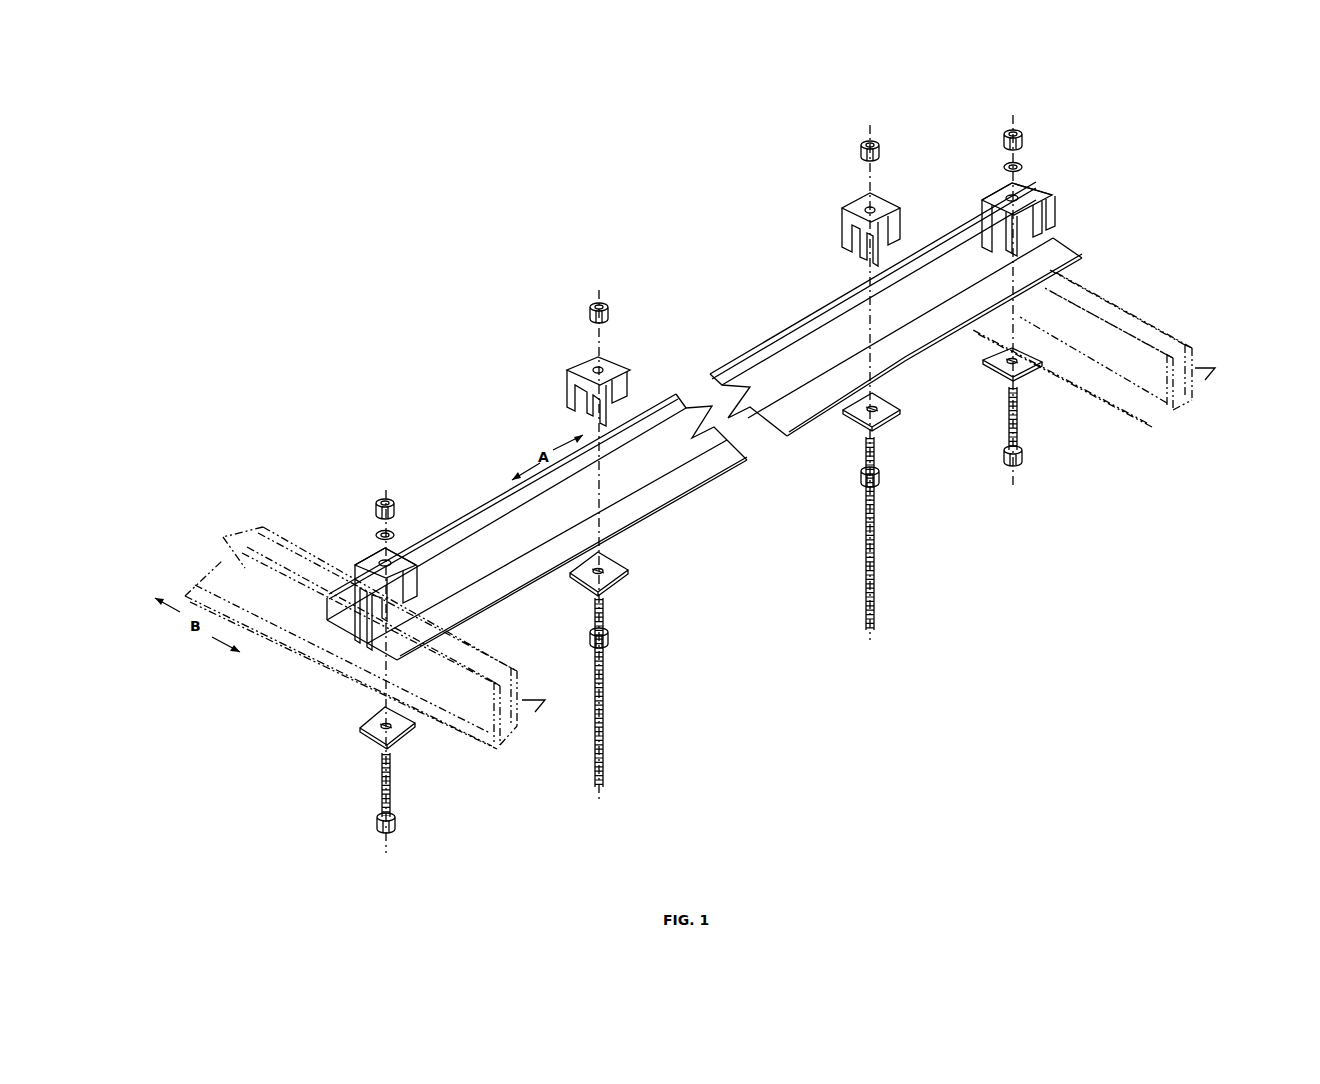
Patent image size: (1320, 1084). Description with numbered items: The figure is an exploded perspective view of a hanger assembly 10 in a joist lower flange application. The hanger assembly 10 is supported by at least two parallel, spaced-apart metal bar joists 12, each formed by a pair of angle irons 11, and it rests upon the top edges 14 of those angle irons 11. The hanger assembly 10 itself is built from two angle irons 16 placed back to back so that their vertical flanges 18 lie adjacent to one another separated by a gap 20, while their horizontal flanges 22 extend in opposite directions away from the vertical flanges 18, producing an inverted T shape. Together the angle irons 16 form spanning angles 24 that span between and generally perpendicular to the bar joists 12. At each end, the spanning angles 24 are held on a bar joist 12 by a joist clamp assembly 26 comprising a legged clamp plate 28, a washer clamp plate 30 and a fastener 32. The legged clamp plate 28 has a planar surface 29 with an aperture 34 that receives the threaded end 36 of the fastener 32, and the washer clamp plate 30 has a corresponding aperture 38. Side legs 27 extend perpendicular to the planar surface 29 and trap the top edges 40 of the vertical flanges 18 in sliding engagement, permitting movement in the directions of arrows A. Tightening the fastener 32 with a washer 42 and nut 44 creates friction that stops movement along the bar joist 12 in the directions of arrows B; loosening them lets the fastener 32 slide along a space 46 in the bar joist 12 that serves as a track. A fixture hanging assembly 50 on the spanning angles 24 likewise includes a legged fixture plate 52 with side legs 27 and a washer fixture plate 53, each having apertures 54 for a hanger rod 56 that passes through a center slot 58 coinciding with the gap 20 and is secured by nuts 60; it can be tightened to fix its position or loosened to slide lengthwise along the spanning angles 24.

The hanger assembly 10 is at (663, 245).
The angle irons 11 is at (470, 745).
The metal bar joists 12 is at (515, 750).
The top edges 14 is at (470, 668).
The angle irons 16 is at (762, 350).
The vertical flanges 18 is at (470, 511).
The gap 20 is at (650, 418).
The horizontal flanges 22 is at (340, 617).
The spanning angles 24 is at (370, 644).
The joist clamp assembly 26 is at (297, 487).
The side legs 27 is at (354, 572).
The legged clamp plate 28 is at (400, 563).
The planar surface 29 is at (398, 560).
The washer clamp plate 30 is at (400, 732).
The fastener 32 is at (379, 795).
The aperture 34 is at (370, 556).
The threaded end 36 is at (379, 760).
The aperture 38 is at (380, 726).
The top edges 40 is at (822, 325).
The washer 42 is at (392, 533).
The nut 44 is at (380, 500).
The space 46 is at (522, 702).
The fixture hanging assembly 50 is at (557, 305).
The legged fixture plate 52 is at (575, 368).
The washer fixture plate 53 is at (610, 578).
The apertures 54 is at (603, 366).
The hanger rod 56 is at (605, 665).
The center slot 58 is at (500, 505).
The nuts 60 is at (605, 312).